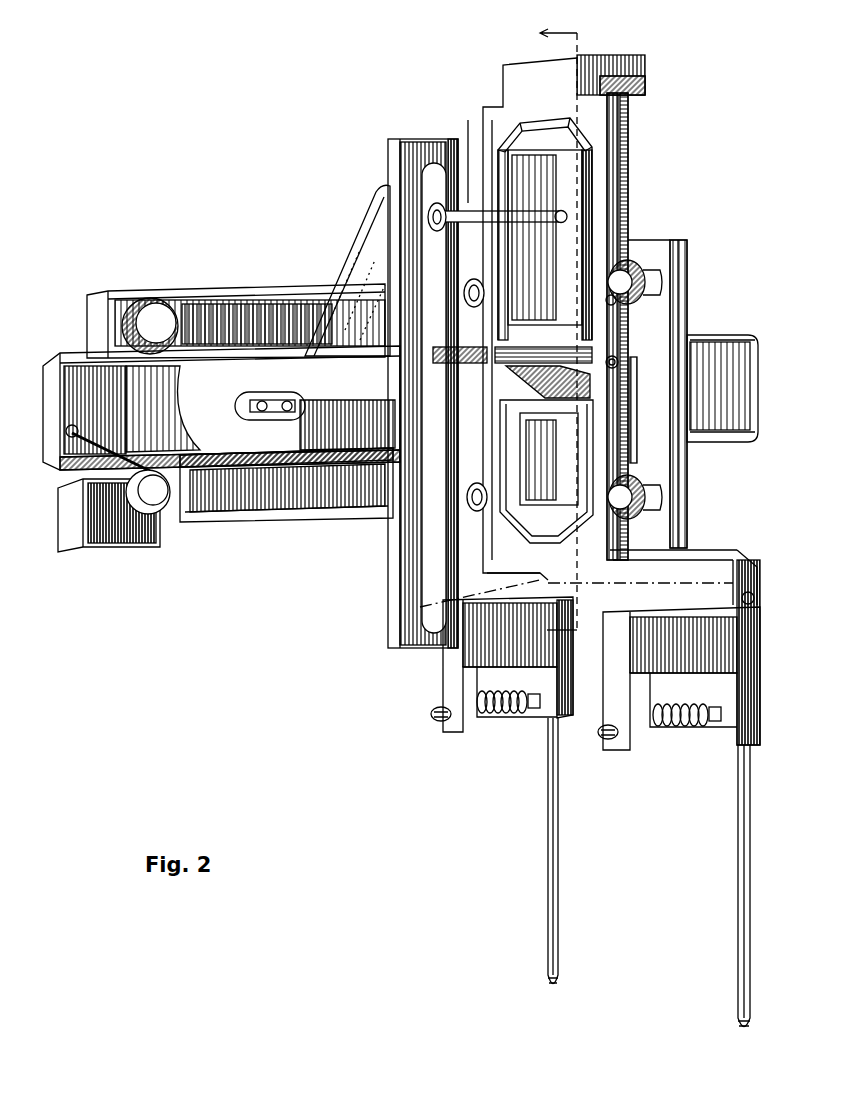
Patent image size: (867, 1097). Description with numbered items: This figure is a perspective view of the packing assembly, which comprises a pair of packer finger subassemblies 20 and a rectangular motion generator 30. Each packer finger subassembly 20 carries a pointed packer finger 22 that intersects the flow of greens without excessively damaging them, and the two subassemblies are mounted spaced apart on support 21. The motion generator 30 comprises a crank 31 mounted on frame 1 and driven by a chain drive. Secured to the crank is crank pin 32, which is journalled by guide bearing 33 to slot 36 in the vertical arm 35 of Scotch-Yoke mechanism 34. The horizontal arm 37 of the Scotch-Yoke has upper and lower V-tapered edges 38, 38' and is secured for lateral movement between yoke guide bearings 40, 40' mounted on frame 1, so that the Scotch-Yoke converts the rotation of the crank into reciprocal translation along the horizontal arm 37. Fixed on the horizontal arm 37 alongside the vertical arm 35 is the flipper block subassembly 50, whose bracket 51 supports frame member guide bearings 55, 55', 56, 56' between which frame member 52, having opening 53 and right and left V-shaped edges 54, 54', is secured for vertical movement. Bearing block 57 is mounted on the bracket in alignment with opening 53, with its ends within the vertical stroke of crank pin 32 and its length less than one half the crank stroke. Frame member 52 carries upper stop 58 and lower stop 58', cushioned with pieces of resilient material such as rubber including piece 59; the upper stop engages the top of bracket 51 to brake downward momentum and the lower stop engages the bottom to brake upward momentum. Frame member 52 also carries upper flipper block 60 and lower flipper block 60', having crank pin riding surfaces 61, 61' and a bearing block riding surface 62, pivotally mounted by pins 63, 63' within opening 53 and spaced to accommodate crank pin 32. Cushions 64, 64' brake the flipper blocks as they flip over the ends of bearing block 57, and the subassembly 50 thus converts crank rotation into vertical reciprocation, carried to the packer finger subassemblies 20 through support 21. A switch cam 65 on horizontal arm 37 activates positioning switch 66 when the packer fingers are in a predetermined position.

The frame 1 is at (88, 292).
The packer finger subassembly 20 is at (445, 690).
The support 21 is at (755, 565).
The packer finger 22 is at (548, 838).
The rectangular motion generator 30 is at (332, 252).
The crank 31 is at (350, 285).
The crank pin 32 is at (446, 210).
The guide bearing 33 is at (428, 216).
The Scotch-Yoke mechanism 34 is at (370, 488).
The vertical arm 35 is at (400, 556).
The slot 36 is at (432, 612).
The horizontal arm 37 is at (298, 440).
The upper V-tapered edge 38 is at (207, 399).
The lower V-tapered edge 38' is at (82, 468).
The yoke guide bearing 40 is at (150, 306).
The yoke guide bearing 40' is at (167, 513).
The flipper block subassembly 50 is at (636, 231).
The bracket 51 is at (687, 328).
The frame member 52 is at (527, 65).
The opening 53 is at (537, 132).
The right V-shaped edge 54 is at (642, 326).
The left V-shaped edge 54' is at (506, 315).
The frame member guide bearing 55 is at (666, 271).
The frame member guide bearing 55' is at (506, 271).
The frame member guide bearing 56 is at (667, 488).
The frame member guide bearing 56' is at (522, 462).
The bearing block 57 is at (637, 446).
The upper stop 58 is at (634, 67).
The lower stop 58' is at (583, 551).
The resilient cushioning piece 59 is at (645, 82).
The upper flipper block 60 is at (628, 245).
The lower flipper block 60' is at (592, 382).
The crank pin riding surface 61 is at (545, 196).
The crank pin riding surface 61' is at (534, 242).
The bearing block riding surface 62 is at (553, 325).
The pin 63 is at (638, 314).
The pin 63' is at (642, 351).
The cushion 64 is at (528, 110).
The cushion 64' is at (546, 482).
The switch cam 65 is at (258, 392).
The positioning switch 66 is at (110, 547).